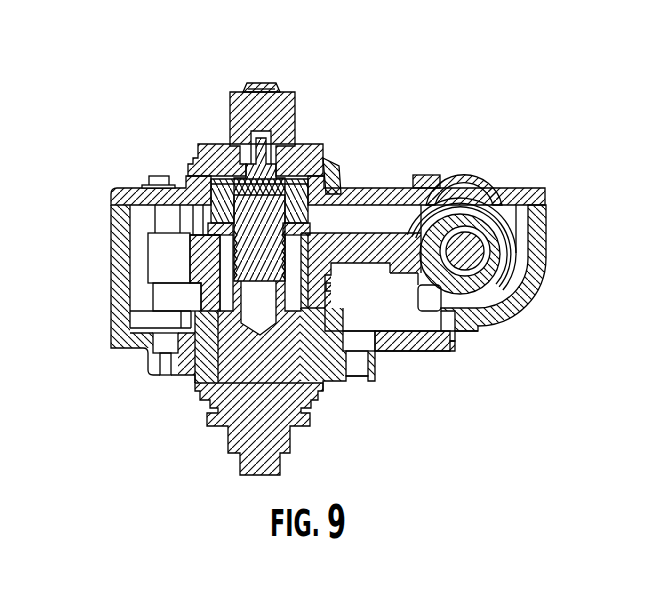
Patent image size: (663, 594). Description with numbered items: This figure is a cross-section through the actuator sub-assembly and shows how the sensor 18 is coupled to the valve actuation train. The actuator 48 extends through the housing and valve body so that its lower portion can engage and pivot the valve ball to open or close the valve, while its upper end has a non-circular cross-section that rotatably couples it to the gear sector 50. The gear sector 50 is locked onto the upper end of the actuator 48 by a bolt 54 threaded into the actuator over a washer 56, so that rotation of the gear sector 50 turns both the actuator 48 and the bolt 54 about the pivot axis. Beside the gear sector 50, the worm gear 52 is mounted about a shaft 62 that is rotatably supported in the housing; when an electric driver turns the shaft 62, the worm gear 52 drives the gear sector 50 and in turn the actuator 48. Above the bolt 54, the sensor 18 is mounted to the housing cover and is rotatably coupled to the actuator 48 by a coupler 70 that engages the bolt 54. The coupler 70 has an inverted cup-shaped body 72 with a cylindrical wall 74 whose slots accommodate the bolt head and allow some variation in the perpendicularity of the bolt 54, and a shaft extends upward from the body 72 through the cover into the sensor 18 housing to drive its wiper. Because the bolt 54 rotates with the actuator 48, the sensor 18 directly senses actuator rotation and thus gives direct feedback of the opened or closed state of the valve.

The sensor 18 is at (291, 100).
The actuator 48 is at (199, 410).
The gear sector 50 is at (348, 242).
The worm gear 52 is at (437, 346).
The bolt 54 is at (230, 243).
The washer 56 is at (415, 167).
The shaft 62 is at (471, 298).
The coupler 70 is at (322, 158).
The inverted cup-shaped body 72 is at (303, 217).
The cylindrical wall 74 is at (200, 196).